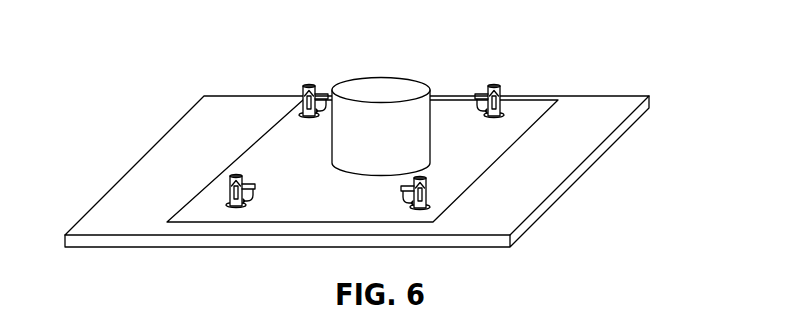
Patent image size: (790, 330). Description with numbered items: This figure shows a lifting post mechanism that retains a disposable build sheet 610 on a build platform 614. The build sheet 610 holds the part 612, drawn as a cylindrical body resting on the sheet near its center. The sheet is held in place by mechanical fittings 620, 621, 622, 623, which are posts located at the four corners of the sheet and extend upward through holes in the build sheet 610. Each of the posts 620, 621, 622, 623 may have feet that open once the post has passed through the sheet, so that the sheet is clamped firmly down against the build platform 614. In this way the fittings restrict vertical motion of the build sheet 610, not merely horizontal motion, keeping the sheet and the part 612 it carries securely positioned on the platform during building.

The build sheet 610 is at (465, 180).
The part 612 is at (385, 87).
The build platform 614 is at (167, 153).
The mechanical fitting 620 is at (310, 83).
The mechanical fitting 621 is at (493, 85).
The mechanical fitting 622 is at (430, 203).
The mechanical fitting 623 is at (228, 199).